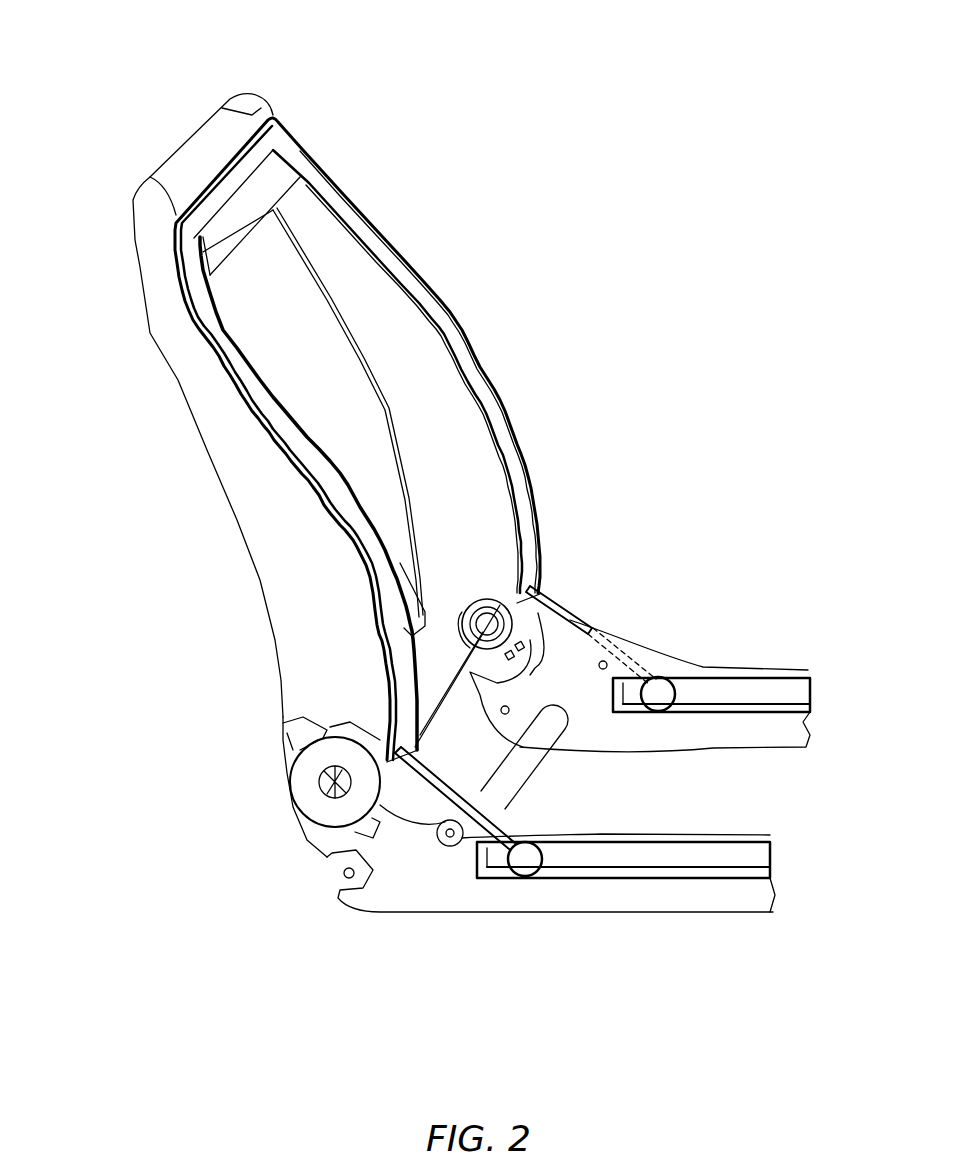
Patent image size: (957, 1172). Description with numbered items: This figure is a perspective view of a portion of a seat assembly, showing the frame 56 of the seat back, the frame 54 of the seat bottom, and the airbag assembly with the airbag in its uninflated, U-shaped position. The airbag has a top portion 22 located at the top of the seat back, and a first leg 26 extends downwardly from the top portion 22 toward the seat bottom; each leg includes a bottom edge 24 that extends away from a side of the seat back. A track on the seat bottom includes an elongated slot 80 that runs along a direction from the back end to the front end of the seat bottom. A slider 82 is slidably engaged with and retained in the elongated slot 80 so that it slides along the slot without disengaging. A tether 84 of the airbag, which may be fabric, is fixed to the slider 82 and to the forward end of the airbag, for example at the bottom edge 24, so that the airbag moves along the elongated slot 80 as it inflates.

The top portion 22 is at (222, 170).
The bottom edge 24 is at (328, 480).
The first leg 26 is at (422, 295).
The frame 54 is at (437, 893).
The frame 56 is at (152, 356).
The elongated slot 80 is at (776, 714).
The slider 82 is at (654, 698).
The tether 84 is at (557, 610).